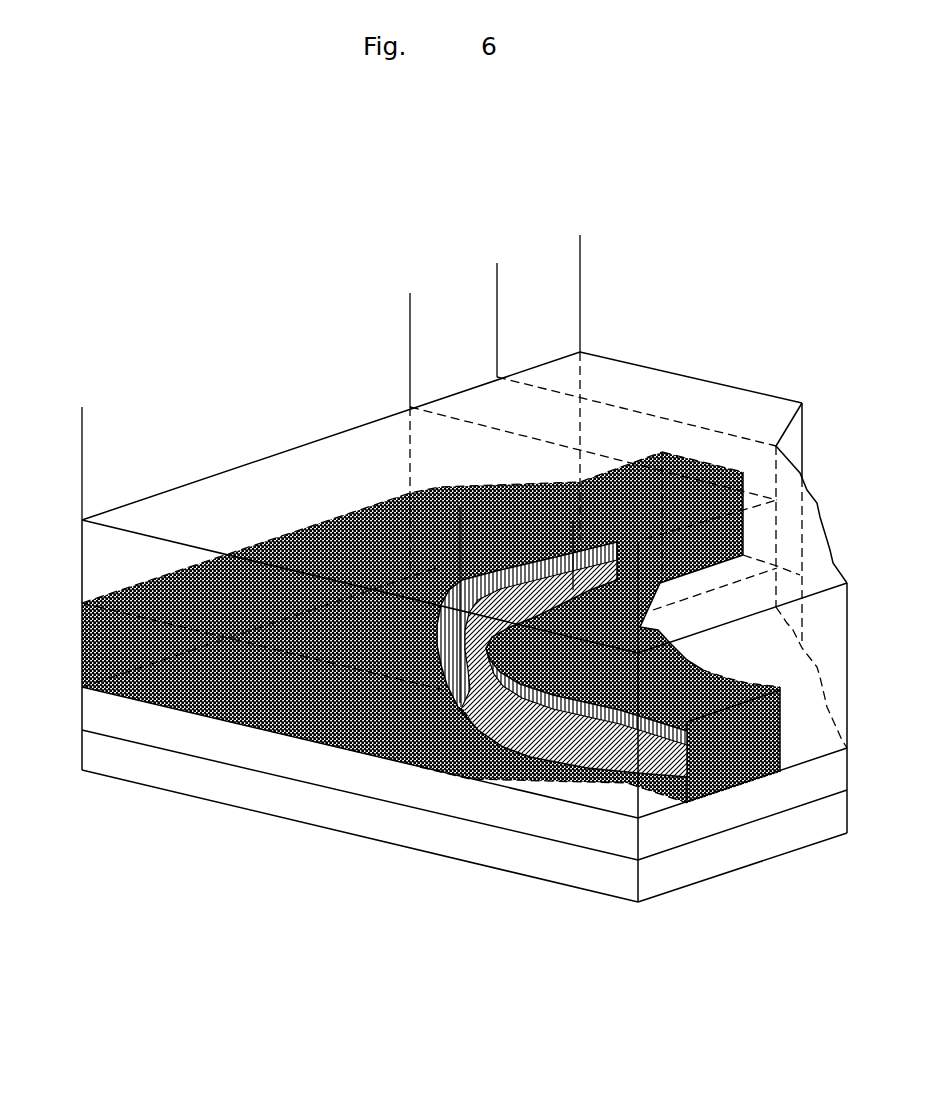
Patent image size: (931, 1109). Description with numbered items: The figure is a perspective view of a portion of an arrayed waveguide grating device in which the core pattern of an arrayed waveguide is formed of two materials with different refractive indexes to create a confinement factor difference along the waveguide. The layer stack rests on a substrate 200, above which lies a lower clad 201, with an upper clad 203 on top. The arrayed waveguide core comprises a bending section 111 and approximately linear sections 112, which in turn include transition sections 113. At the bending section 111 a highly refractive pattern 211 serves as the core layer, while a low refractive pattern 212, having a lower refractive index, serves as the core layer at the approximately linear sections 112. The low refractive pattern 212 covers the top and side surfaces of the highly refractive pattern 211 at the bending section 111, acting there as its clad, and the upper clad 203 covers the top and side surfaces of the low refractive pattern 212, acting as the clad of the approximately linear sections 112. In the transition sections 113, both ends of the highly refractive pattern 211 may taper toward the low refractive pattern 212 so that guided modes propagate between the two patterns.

The bending section 111 is at (410, 305).
The approximately linear sections 112 is at (580, 248).
The transition sections 113 is at (497, 277).
The substrate 200 is at (710, 865).
The lower clad 201 is at (768, 803).
The upper clad 203 is at (355, 441).
The highly refractive pattern 211 is at (440, 636).
The low refractive pattern 212 is at (485, 497).